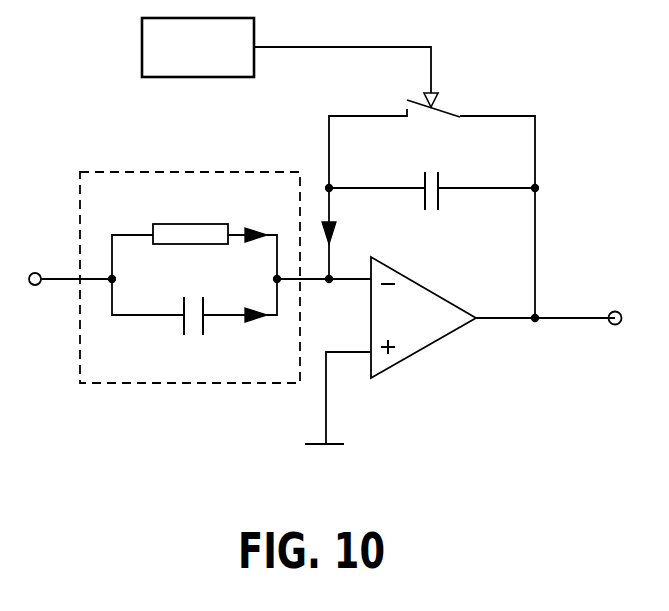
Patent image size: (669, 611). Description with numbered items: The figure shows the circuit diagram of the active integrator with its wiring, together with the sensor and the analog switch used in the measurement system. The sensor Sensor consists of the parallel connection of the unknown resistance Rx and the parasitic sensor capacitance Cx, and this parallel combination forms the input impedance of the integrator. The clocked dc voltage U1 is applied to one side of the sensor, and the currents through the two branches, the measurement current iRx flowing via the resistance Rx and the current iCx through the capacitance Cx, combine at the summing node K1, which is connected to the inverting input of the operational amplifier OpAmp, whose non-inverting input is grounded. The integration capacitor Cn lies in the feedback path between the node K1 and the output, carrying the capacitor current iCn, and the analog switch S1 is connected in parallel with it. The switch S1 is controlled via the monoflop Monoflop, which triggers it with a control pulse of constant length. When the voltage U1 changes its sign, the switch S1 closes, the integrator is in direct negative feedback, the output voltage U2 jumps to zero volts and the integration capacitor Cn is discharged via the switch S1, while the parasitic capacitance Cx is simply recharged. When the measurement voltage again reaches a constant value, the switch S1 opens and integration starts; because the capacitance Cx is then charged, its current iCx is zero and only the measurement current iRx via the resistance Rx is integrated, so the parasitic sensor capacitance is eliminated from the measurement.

The monoflop Monoflop is at (290, 62).
The analog switch S1 is at (432, 144).
The integration capacitor Cn is at (432, 211).
The integration capacitor current iCn is at (346, 234).
The operational amplifier OpAmp is at (460, 316).
The summing node K1 is at (324, 298).
The clocked dc voltage U1 is at (62, 261).
The output voltage U2 is at (616, 302).
The sensor Sensor is at (190, 298).
The resistance to be measured Rx is at (194, 238).
The measurement current iRx is at (255, 219).
The parasitic sensor capacitance Cx is at (194, 325).
The parasitic capacitance current iCx is at (255, 337).